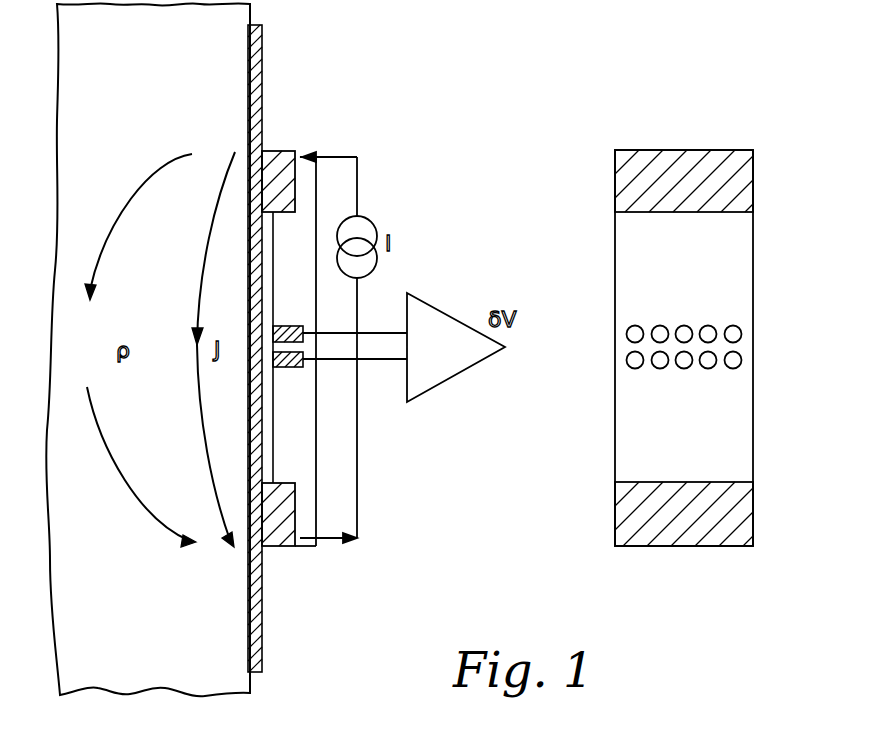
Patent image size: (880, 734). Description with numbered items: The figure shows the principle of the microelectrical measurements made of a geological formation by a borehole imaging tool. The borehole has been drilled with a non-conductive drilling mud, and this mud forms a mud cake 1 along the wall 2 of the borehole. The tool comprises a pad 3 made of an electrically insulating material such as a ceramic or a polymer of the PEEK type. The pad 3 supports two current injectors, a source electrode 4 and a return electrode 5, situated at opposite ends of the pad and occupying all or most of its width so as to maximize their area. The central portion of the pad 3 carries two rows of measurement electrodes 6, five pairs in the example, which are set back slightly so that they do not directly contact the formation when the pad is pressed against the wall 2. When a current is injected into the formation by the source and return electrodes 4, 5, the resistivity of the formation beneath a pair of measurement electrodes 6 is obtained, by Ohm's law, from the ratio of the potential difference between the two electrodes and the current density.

The mud cake 1 is at (265, 52).
The wall of a borehole 2 is at (153, 93).
The pad 3 is at (303, 437).
The source electrode 4 is at (280, 150).
The return electrode 5 is at (280, 548).
The measurement electrodes 6 is at (283, 326).